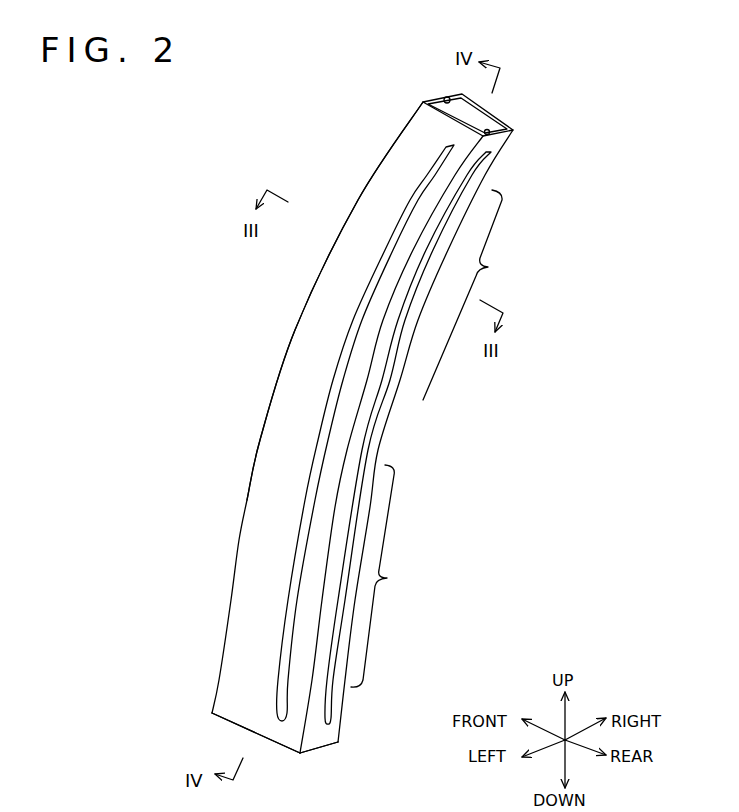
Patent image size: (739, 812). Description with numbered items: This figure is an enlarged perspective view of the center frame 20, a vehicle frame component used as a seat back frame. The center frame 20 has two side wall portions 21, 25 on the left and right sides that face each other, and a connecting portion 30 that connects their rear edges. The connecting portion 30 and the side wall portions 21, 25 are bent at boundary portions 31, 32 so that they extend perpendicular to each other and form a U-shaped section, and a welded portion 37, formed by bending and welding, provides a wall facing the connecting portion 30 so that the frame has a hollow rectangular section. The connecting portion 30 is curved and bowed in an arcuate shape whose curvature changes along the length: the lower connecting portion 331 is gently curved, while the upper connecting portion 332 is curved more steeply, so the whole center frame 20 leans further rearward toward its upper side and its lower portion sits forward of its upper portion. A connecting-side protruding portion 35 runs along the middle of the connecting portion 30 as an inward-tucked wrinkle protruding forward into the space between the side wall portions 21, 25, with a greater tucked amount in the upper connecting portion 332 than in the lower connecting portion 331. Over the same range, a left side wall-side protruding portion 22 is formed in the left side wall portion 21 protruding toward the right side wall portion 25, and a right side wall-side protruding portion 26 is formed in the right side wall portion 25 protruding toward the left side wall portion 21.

The center frame 20 is at (522, 172).
The left side wall portion 21 is at (285, 440).
The left side wall-side protruding portion 22 is at (288, 597).
The right side wall portion 25 is at (480, 118).
The right side wall-side protruding portion 26 is at (507, 112).
The connecting portion 30 is at (387, 422).
The boundary portion 31 is at (302, 738).
The boundary portion 32 is at (343, 723).
The connecting-side protruding portion 35 is at (366, 447).
The welded portion 37 is at (442, 98).
The lower connecting portion 331 is at (391, 576).
The upper connecting portion 332 is at (477, 295).